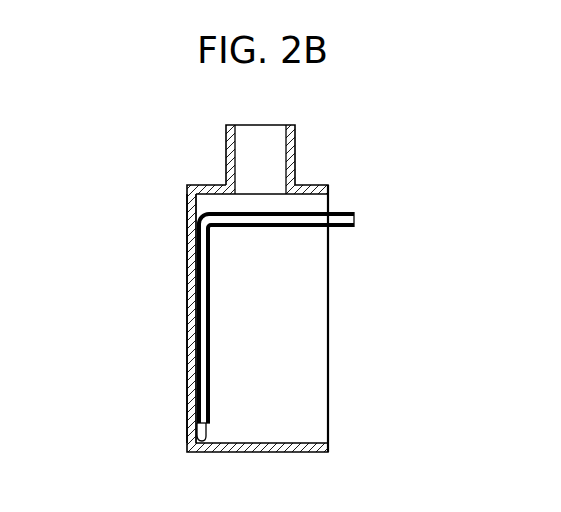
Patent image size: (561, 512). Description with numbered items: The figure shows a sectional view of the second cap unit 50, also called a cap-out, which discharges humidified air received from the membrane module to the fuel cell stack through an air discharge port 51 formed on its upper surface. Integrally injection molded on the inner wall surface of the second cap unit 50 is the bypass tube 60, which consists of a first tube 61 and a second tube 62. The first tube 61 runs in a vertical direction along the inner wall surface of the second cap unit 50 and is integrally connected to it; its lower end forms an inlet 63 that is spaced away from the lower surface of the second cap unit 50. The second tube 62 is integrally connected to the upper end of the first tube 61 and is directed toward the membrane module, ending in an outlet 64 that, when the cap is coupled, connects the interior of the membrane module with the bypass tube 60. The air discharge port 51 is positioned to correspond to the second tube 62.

The second cap unit 50 is at (207, 288).
The air discharge port 51 is at (227, 148).
The bypass tube 60 is at (274, 301).
The first tube 61 is at (191, 294).
The second tube 62 is at (298, 211).
The inlet 63 is at (197, 438).
The outlet 64 is at (355, 220).